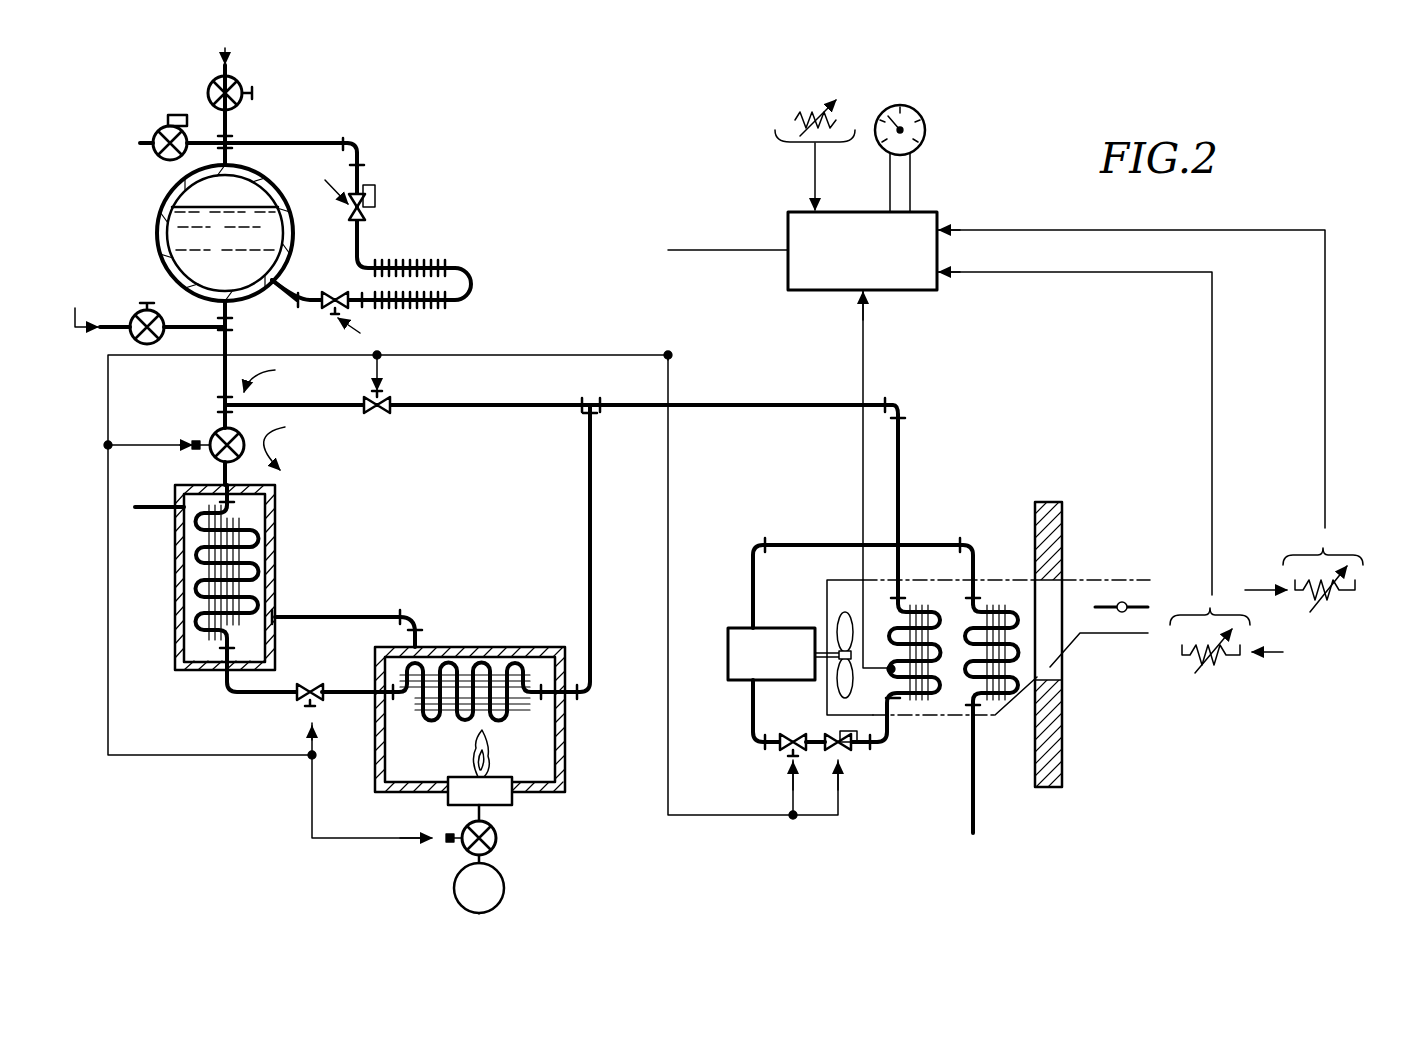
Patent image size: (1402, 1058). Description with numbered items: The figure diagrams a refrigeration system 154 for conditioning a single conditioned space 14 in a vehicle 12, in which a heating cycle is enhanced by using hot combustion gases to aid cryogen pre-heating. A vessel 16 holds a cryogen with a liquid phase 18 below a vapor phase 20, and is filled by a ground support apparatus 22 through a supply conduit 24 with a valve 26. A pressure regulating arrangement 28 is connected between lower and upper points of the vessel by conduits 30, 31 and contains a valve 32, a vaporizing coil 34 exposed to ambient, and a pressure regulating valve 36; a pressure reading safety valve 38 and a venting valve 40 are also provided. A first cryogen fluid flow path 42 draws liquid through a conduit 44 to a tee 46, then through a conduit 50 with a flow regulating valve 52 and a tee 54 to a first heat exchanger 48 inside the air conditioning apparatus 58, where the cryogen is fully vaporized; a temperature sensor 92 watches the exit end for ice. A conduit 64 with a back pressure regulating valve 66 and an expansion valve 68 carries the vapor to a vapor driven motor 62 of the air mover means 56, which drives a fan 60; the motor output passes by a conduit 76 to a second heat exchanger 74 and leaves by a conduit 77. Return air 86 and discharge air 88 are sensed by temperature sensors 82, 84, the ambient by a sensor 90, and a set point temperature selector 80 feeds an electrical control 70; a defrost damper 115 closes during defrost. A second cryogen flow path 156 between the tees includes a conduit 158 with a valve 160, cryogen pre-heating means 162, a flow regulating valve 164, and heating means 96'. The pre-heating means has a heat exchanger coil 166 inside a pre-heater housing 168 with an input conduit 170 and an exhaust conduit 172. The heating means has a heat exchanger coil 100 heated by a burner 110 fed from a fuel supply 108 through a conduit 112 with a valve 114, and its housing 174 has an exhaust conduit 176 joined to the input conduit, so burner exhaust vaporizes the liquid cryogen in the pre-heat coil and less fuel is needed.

The vehicle 12 is at (1062, 510).
The conditioned space 14 is at (1186, 603).
The vessel 16 is at (160, 260).
The liquid phase 18 is at (208, 205).
The vapor phase 20 is at (240, 178).
The ground support apparatus 22 is at (81, 305).
The supply conduit 24 is at (128, 325).
The valve 26 is at (140, 344).
The pressure regulating arrangement 28 is at (468, 188).
The conduit 30 is at (290, 298).
The conduit 31 is at (365, 163).
The valve 32 is at (330, 290).
The vaporizing coil 34 is at (468, 275).
The pressure regulating valve 36 is at (368, 214).
The pressure reading safety valve 38 is at (175, 114).
The venting valve 40 is at (243, 85).
The first cryogen fluid flow path 42 is at (271, 375).
The conduit 44 is at (225, 380).
The tee 46 is at (225, 404).
The first heat exchanger 48 is at (940, 622).
The conduit 50 is at (440, 405).
The flow regulating valve 52 is at (380, 413).
The tee 54 is at (595, 388).
The air mover means 56 is at (796, 718).
The air conditioning apparatus 58 is at (827, 600).
The fan 60 is at (850, 616).
The vapor driven motor 62 is at (728, 652).
The conduit 64 is at (880, 745).
The back pressure regulating valve 66 is at (846, 752).
The expansion valve 68 is at (785, 752).
The electrical control 70 is at (788, 215).
The second heat exchanger 74 is at (975, 642).
The conduit 76 is at (840, 545).
The conduit 77 is at (975, 812).
The set point temperature selector 80 is at (925, 125).
The return air temperature sensor 82 is at (1222, 668).
The discharge air temperature sensor 84 is at (1340, 605).
The return air 86 is at (1283, 652).
The discharge air 88 is at (1245, 590).
The ambient air temperature sensor 90 is at (800, 118).
The temperature sensor 92 is at (887, 667).
The heating means 96' is at (537, 872).
The heat exchanger coil 100 is at (478, 652).
The fuel supply 108 is at (505, 885).
The burner 110 is at (455, 775).
The conduit 112 is at (482, 860).
The valve 114 is at (465, 850).
The defrost damper 115 is at (1122, 613).
The refrigeration system 154 is at (612, 200).
The second cryogen flow path 156 is at (289, 440).
The conduit 158 is at (590, 507).
The valve 160 is at (220, 433).
The cryogen pre-heating means 162 is at (345, 528).
The flow regulating valve 164 is at (312, 683).
The heat exchanger coil 166 is at (195, 545).
The pre-heater housing 168 is at (175, 655).
The input conduit 170 is at (278, 615).
The exhaust conduit 172 is at (153, 497).
The housing 174 is at (567, 765).
The exhaust conduit 176 is at (335, 610).